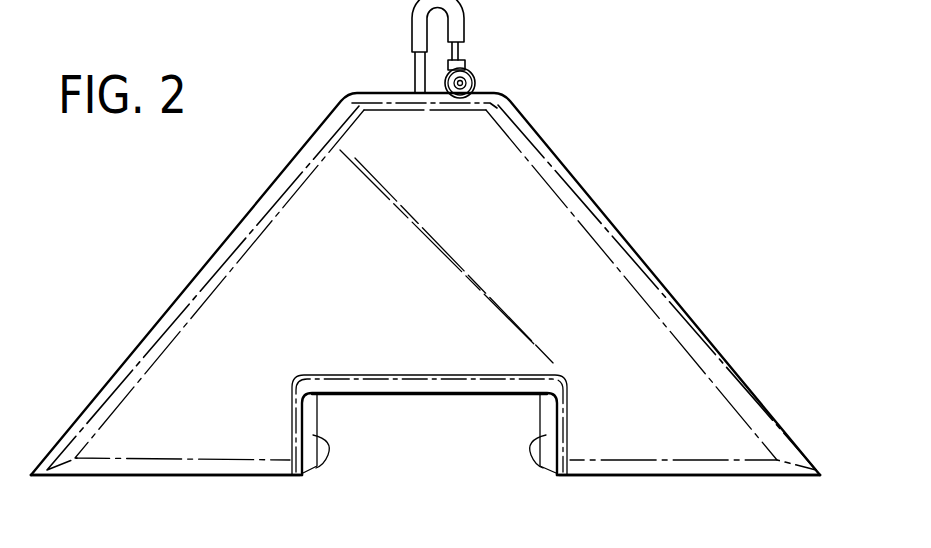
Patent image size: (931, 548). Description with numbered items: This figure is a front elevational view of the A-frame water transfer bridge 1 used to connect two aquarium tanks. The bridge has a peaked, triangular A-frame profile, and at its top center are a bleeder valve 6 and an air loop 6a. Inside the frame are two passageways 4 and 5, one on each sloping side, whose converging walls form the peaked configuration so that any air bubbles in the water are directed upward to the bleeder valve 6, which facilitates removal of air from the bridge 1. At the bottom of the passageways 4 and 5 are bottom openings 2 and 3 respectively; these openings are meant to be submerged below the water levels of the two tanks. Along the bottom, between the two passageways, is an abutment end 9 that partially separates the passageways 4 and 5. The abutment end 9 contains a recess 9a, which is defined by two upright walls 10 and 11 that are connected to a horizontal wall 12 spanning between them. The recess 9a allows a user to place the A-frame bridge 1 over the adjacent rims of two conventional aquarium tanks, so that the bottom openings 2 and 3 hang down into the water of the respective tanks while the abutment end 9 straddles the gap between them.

The A-frame water transfer bridge 1 is at (616, 162).
The bottom opening 2 is at (150, 485).
The bottom opening 3 is at (680, 483).
The passageway 4 is at (208, 378).
The passageway 5 is at (655, 370).
The bleeder valve 6 is at (474, 60).
The air loop 6a is at (414, 15).
The abutment end 9 is at (388, 394).
The recess 9a is at (445, 425).
The upright wall 10 is at (323, 466).
The upright wall 11 is at (529, 452).
The horizontal wall 12 is at (487, 394).